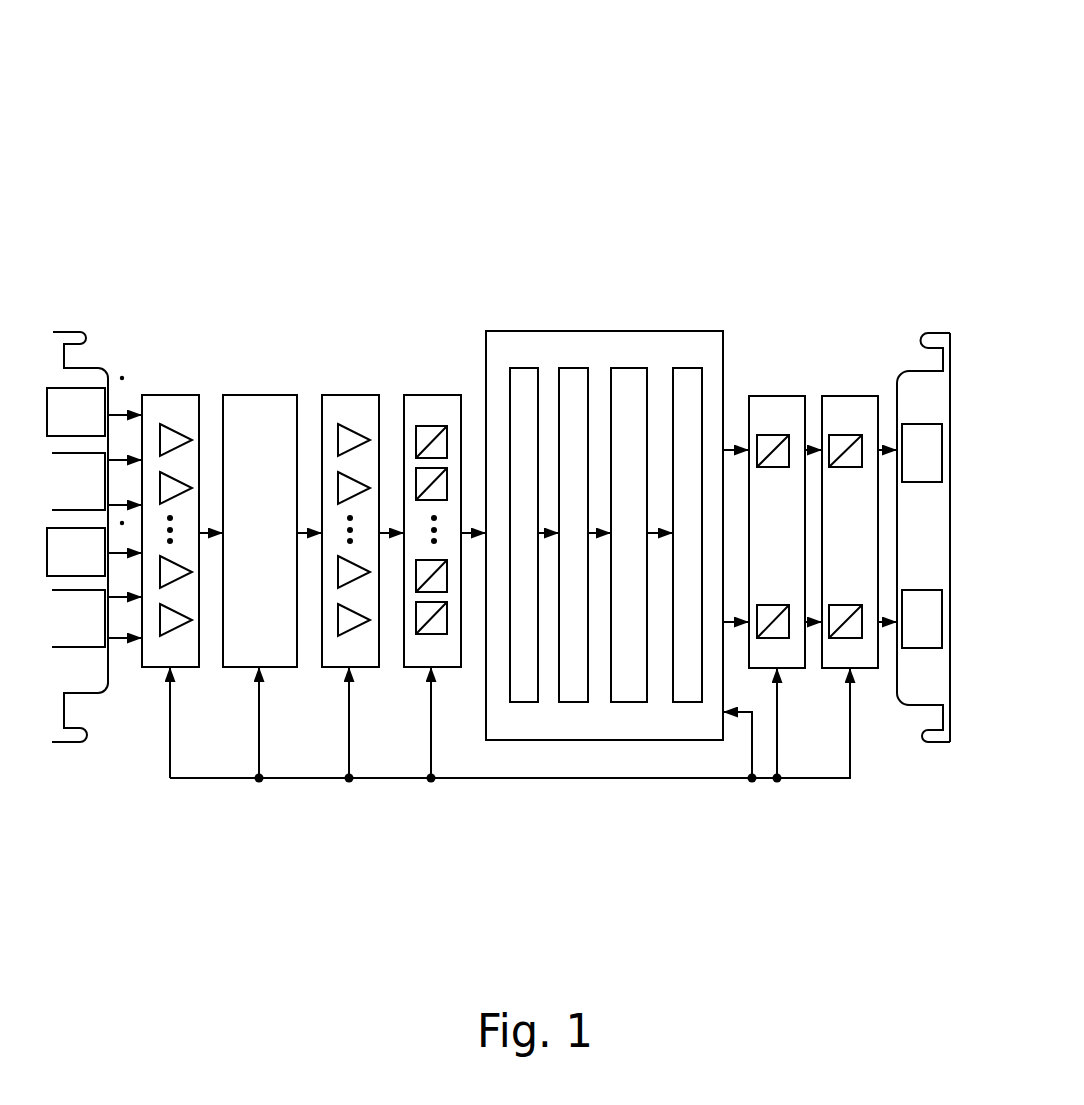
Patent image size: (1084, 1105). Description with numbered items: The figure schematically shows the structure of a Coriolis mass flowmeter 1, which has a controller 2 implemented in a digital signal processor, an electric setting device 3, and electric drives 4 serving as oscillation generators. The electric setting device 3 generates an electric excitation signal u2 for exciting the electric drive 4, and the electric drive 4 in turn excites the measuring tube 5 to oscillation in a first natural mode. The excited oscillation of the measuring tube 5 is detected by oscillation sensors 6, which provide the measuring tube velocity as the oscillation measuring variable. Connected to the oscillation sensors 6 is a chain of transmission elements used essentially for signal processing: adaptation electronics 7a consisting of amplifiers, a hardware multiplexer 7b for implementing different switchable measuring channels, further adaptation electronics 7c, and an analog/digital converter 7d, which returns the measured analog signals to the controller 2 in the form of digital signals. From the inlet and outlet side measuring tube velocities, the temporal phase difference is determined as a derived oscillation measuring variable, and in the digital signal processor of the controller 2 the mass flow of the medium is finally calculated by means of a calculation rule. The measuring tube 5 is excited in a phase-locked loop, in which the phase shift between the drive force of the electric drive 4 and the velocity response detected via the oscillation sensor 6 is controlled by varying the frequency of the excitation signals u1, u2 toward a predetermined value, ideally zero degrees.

The Coriolis mass flowmeter 1 is at (605, 178).
The controller 2 is at (703, 363).
The electric setting device 3 is at (865, 405).
The electric drive 4 is at (86, 499).
The measuring tube 5 is at (947, 356).
The oscillation sensor 6 is at (86, 433).
The adaptation electronics 7a is at (170, 407).
The hardware multiplexer 7b is at (258, 407).
The further adaptation electronics 7c is at (352, 407).
The analog/digital converter 7d is at (427, 407).
The excitation signal u1 is at (732, 443).
The electric excitation signal u2 is at (887, 443).